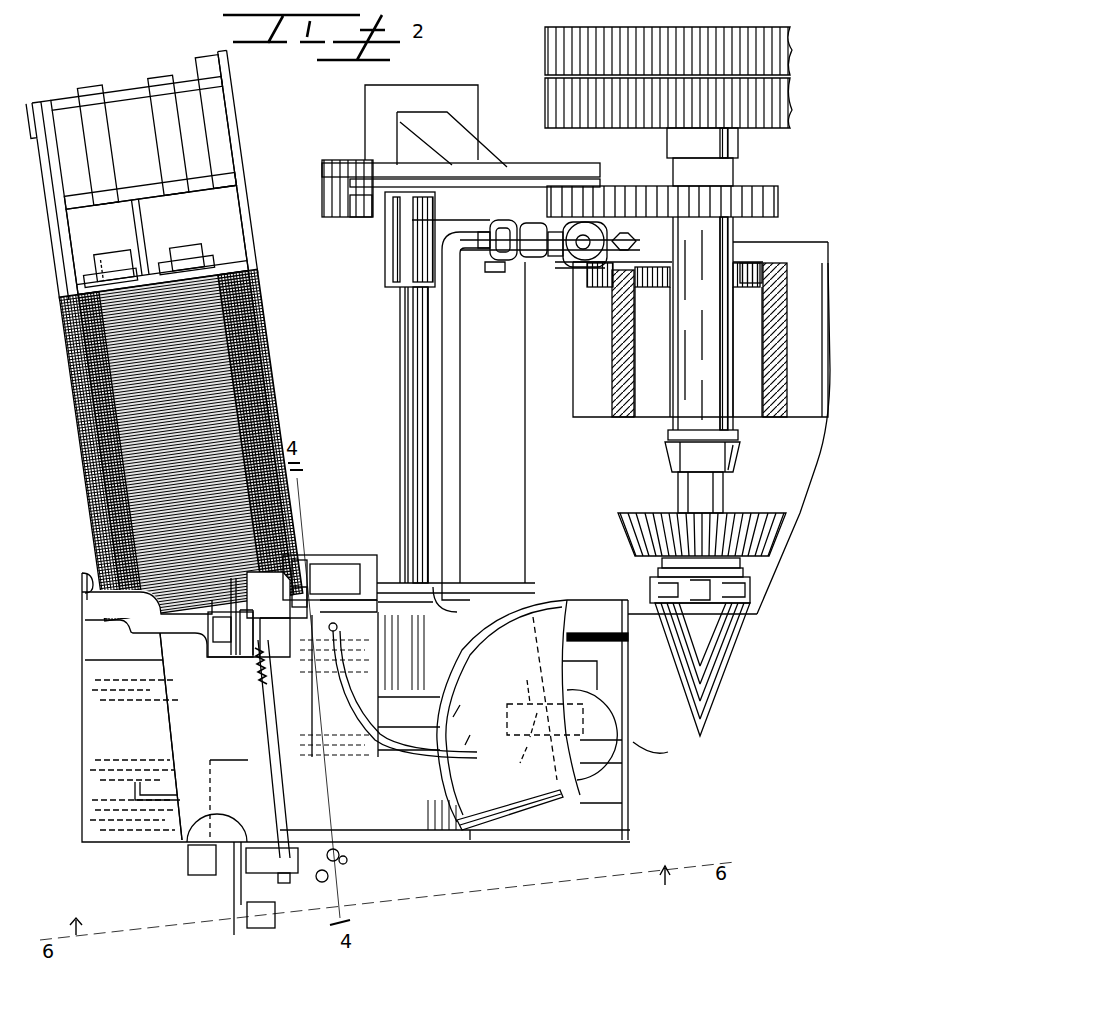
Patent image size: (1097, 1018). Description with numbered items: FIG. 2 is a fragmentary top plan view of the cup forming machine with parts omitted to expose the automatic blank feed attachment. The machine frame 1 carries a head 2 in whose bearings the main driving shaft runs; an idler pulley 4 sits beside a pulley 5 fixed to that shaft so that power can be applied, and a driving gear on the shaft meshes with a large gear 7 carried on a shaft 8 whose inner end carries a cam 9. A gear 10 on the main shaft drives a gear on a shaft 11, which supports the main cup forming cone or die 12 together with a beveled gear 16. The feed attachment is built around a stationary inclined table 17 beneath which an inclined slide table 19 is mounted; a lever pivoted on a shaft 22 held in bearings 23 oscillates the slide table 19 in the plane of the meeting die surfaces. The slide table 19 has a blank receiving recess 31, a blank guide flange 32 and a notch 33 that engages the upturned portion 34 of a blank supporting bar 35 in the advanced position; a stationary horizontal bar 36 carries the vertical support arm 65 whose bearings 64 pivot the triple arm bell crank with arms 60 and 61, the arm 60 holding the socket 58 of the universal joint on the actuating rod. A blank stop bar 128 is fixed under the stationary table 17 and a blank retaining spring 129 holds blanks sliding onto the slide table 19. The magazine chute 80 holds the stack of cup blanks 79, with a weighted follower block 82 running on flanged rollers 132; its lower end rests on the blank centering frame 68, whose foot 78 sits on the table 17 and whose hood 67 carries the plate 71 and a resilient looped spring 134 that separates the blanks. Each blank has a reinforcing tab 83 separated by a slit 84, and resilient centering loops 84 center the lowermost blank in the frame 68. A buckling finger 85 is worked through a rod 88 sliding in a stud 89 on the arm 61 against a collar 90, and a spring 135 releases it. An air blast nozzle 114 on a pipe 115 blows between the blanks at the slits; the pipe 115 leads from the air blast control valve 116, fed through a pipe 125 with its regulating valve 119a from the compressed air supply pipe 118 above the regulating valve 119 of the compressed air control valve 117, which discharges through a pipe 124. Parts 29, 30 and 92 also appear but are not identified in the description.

The machine frame 1 is at (473, 155).
The machine frame head 2 is at (622, 417).
The idler pulley 4 is at (668, 51).
The pulley 5 is at (668, 103).
The large gear 7 is at (760, 196).
The shaft 8 is at (730, 436).
The cam 9 is at (735, 458).
The gear 10 is at (758, 266).
The shaft 11 is at (724, 511).
The main cup forming cone or die 12 is at (712, 660).
The beveled gear 16 is at (640, 527).
The stationary inclined table 17 is at (356, 737).
The inclined slide table 19 is at (567, 711).
The shaft 22 is at (408, 345).
The bearings 23 is at (423, 253).
The bracket 29 is at (372, 206).
The rail 30 is at (508, 170).
The blank receiving recess 31 is at (472, 650).
The blank guide flange 32 is at (522, 828).
The notch 33 is at (513, 699).
The upturned or deflected portion 34 is at (652, 754).
The blank supporting bar 35 is at (540, 758).
The stationary horizontal bar 36 is at (470, 832).
The socket 58 is at (258, 916).
The arm 60 is at (241, 934).
The arm 61 is at (262, 878).
The bearings 64 is at (200, 852).
The vertical arm 65 is at (206, 876).
The hood 67 is at (212, 660).
The blank centering frame 68 is at (148, 608).
The plate 71 is at (204, 736).
The foot 78 is at (108, 648).
The cup blanks 79 is at (85, 478).
The inclined guideway or chute 80 is at (214, 152).
The weighted follower or block 82 is at (110, 243).
The reinforcing tab 83 is at (266, 420).
The slit 84 is at (88, 577).
The buckling cam or finger 85 is at (230, 622).
The rod 88 is at (262, 708).
The stud 89 is at (300, 860).
The collar 90 is at (324, 881).
The bracket 92 is at (138, 798).
The air blast nozzle 114 is at (312, 597).
The pipe 115 is at (455, 532).
The air blast control valve 116 is at (523, 307).
The compressed air control valve 117 is at (600, 300).
The compressed air supply pipe 118 is at (600, 230).
The regulating valve 119 is at (572, 270).
The regulating valve 119a is at (548, 225).
The pipe 124 is at (655, 290).
The pipe 125 is at (553, 264).
The blank stop bar 128 is at (470, 717).
The blank retaining spring 129 is at (362, 757).
The flanged rollers 132 is at (110, 277).
The resilient looped spring 134 is at (278, 556).
The spring 135 is at (267, 668).